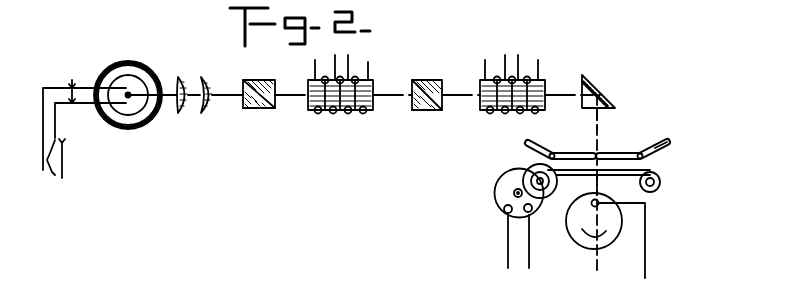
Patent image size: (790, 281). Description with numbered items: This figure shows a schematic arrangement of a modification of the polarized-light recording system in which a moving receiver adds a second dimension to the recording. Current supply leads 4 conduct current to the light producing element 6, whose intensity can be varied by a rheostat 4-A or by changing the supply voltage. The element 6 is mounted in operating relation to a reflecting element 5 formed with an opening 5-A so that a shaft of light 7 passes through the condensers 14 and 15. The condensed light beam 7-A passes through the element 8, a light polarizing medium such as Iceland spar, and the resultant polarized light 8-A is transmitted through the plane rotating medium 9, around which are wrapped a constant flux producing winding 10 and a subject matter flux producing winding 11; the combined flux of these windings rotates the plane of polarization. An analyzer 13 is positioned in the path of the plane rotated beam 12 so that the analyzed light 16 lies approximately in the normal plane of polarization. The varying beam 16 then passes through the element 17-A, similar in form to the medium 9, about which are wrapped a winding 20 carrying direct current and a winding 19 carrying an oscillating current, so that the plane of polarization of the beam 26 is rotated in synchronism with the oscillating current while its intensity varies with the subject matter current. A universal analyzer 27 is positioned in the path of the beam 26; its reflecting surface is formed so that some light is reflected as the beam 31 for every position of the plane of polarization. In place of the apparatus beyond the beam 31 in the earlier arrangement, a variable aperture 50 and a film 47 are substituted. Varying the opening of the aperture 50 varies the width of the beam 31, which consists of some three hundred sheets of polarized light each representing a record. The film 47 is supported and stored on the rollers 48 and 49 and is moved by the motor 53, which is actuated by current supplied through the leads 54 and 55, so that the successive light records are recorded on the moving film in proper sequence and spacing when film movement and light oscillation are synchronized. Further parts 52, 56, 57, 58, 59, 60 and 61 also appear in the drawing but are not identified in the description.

The current supply leads 4 is at (58, 78).
The rheostat 4-A is at (62, 135).
The reflecting element 5 is at (137, 62).
The opening 5-A is at (160, 81).
The light producing element 6 is at (127, 104).
The shaft of light 7 is at (197, 93).
The condensed light beam 7-A is at (228, 98).
The light polarizing medium 8 is at (257, 80).
The polarized light 8-A is at (290, 98).
The plane rotating medium 9 is at (349, 112).
The constant flux producing winding 10 is at (315, 60).
The subject matter flux producing winding 11 is at (368, 63).
The plane rotated beam of light 12 is at (392, 98).
The analyzer 13 is at (428, 80).
The condenser 14 is at (188, 83).
The condenser 15 is at (207, 73).
The analyzed light beam 16 is at (458, 98).
The second plane rotating element 17-A is at (505, 111).
The oscillating current winding 19 is at (538, 61).
The direct current winding 20 is at (485, 60).
The rotated and oscillated polarized light beam 26 is at (560, 97).
The universal analyzer 27 is at (588, 83).
The reflected beam 31 is at (600, 118).
The film 47 is at (582, 172).
The roller 48 is at (661, 183).
The roller 49 is at (533, 167).
The variable aperture 50 is at (560, 148).
The link arm 52 is at (662, 147).
The motor 53 is at (496, 183).
The lead 54 is at (508, 247).
The lead 55 is at (529, 247).
The axis line 56 is at (598, 186).
The cam disc 57 is at (583, 246).
The pin 58 is at (585, 210).
The slot 59 is at (604, 234).
The link arm 60 is at (597, 272).
The bracket 61 is at (645, 265).